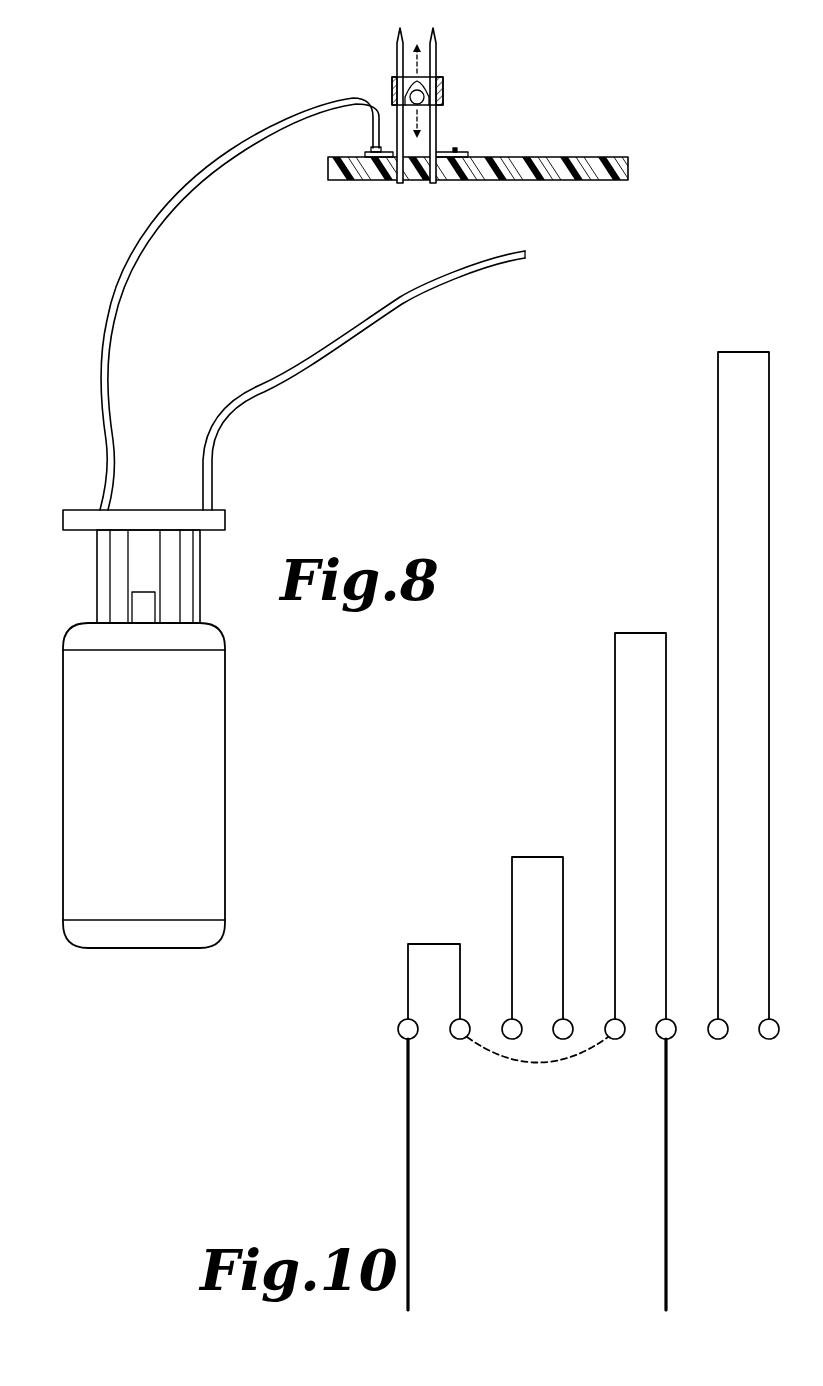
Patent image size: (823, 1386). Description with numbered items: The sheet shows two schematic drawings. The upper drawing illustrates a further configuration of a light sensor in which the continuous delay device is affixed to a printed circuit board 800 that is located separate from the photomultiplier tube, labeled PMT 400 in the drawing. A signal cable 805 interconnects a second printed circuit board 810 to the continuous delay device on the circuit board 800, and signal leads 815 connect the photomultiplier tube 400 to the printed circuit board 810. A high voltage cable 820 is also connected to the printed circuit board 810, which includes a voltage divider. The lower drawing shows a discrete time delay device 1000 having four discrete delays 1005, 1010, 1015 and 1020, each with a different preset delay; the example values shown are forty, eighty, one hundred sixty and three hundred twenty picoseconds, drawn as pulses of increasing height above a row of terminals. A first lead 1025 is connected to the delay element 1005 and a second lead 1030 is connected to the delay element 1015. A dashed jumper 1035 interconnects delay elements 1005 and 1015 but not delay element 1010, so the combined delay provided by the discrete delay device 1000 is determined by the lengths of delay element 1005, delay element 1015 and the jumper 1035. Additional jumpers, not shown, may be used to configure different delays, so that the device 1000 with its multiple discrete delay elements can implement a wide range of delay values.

In FIG. 8, the printed circuit board 800 is at (372, 197).
In FIG. 8, the signal cable 805 is at (202, 187).
In FIG. 8, the second printed circuit board 810 is at (78, 508).
In FIG. 8, the signal leads 815 is at (97, 580).
In FIG. 8, the high voltage cable 820 is at (402, 300).
In FIG. 8, the photomultiplier tube (PMT) 400 is at (225, 778).
In FIG. 10, the time delay device 1000 is at (636, 448).
In FIG. 10, the delay element 1005 is at (435, 902).
In FIG. 10, the delay element 1010 is at (538, 815).
In FIG. 10, the delay element 1015 is at (640, 592).
In FIG. 10, the delay element 1020 is at (745, 310).
In FIG. 10, the first lead 1025 is at (410, 1203).
In FIG. 10, the second lead 1030 is at (668, 1203).
In FIG. 10, the jumper 1035 is at (551, 1063).